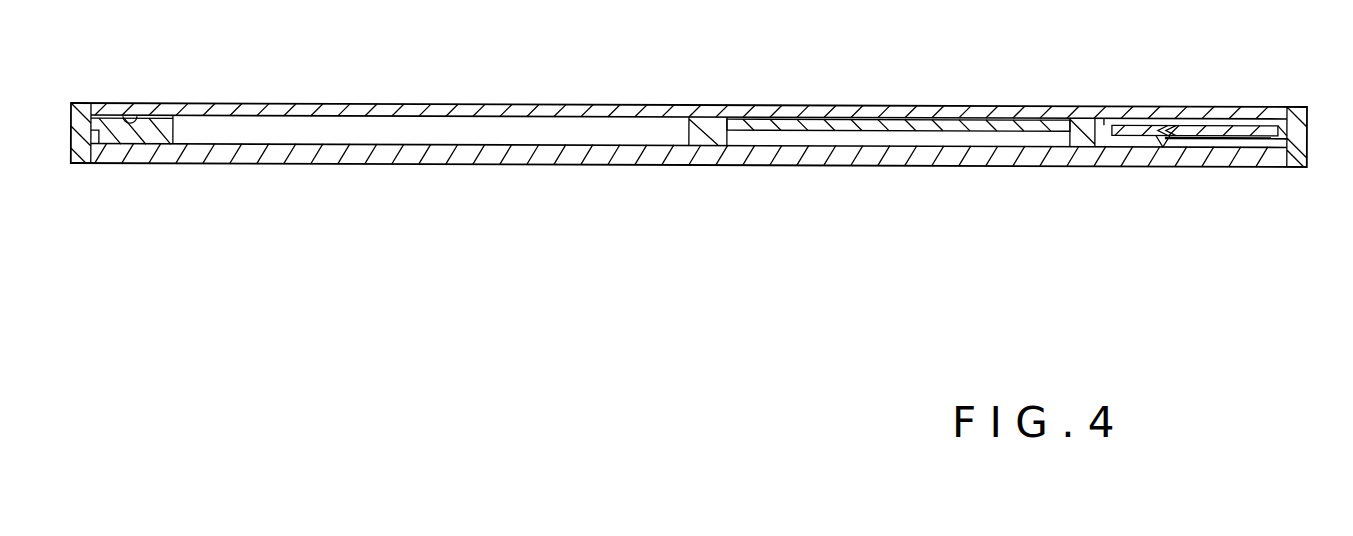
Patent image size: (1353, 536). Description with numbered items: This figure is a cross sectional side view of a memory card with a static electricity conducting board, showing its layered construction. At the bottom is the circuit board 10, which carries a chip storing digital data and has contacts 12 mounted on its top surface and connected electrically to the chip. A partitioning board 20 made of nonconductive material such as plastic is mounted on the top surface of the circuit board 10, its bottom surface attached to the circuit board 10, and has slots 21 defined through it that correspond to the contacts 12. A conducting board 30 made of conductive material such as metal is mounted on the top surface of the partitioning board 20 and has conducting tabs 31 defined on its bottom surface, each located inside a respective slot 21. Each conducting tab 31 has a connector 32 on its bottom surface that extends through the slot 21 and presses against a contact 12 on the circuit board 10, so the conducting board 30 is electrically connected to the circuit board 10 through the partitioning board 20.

The circuit board 10 is at (1080, 162).
The contacts 12 is at (1158, 144).
The partitioning board 20 is at (1298, 107).
The slots 21 is at (1104, 116).
The conducting board 30 is at (1193, 112).
The conducting tabs 31 is at (1232, 136).
The connector 32 is at (1164, 145).